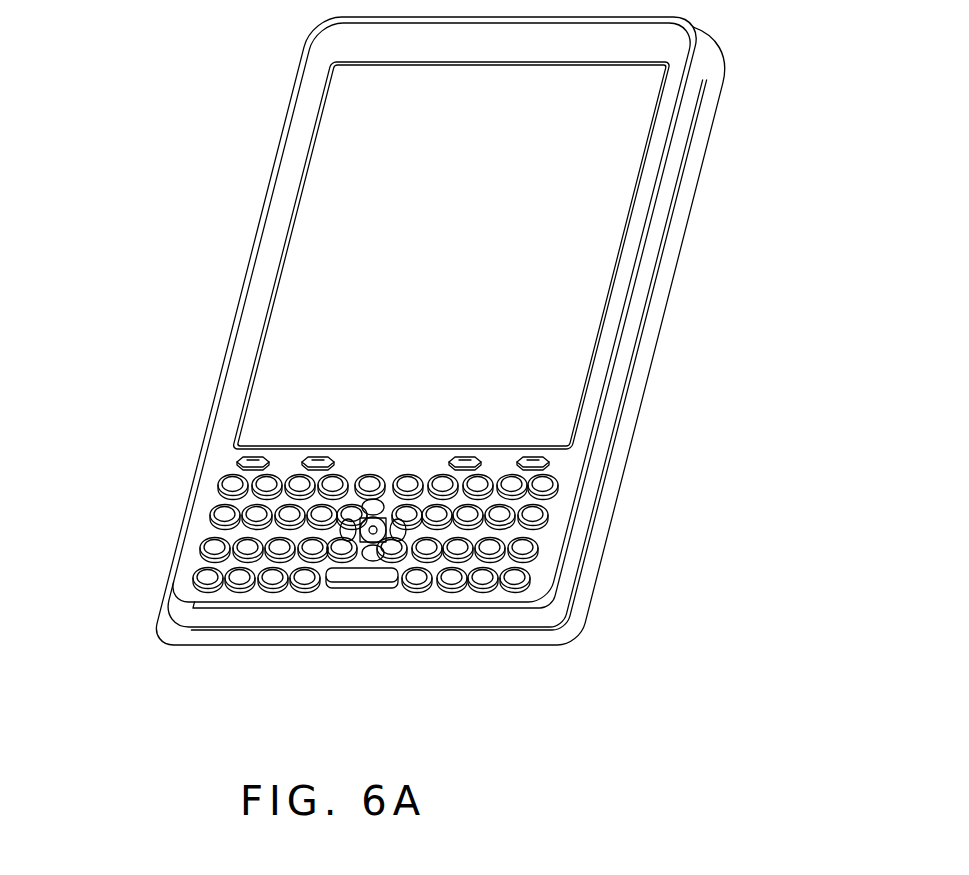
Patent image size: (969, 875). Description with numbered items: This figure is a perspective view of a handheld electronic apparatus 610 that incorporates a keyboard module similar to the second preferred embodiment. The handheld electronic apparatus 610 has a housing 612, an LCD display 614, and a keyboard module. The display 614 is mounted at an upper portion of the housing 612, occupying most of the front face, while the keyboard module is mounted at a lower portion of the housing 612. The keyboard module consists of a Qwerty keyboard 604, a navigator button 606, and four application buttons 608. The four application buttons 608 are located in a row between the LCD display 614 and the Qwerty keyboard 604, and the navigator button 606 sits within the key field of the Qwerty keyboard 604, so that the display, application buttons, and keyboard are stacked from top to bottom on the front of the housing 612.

The Qwerty keyboard 604 is at (550, 485).
The navigator button 606 is at (367, 515).
The application buttons 608 is at (482, 458).
The handheld electronic apparatus 610 is at (366, 710).
The housing 612 is at (652, 290).
The LCD display 614 is at (610, 185).